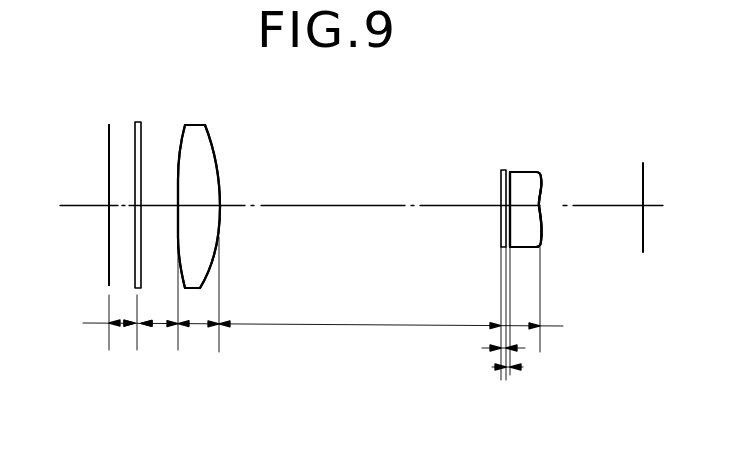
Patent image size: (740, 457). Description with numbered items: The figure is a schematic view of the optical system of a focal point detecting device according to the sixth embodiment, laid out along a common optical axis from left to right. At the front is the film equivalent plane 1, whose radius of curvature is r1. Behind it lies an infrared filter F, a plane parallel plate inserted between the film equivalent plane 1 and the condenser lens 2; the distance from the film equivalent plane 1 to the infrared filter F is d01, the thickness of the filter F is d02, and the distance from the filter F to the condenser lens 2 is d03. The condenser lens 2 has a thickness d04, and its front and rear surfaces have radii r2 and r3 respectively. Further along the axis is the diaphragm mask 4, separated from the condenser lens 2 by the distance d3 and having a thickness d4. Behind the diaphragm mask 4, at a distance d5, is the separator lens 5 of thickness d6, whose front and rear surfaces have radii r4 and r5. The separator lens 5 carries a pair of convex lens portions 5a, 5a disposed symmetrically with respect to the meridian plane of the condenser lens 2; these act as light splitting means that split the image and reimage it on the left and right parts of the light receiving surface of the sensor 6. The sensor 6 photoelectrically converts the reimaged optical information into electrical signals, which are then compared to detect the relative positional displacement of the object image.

The film equivalent plane 1 is at (109, 126).
The infrared filter F is at (138, 121).
The condenser lens 2 is at (195, 133).
The diaphragm mask 4 is at (501, 170).
The separator lens 5 is at (530, 170).
The convex lens portions 5a is at (537, 183).
The sensor 6 is at (642, 186).
The radius of curvature of the film equivalent plane r1 is at (109, 148).
The radius of the front surface of the condenser lens r2 is at (183, 146).
The radius of the rear surface of the condenser lens r3 is at (208, 142).
The radius of curvature of the front surface of the separator lens r4 is at (516, 182).
The radius of curvature of the rear surface of the separator lens r5 is at (541, 188).
The distance from the film equivalent plane to the infrared filter d01 is at (119, 325).
The thickness of the infrared filter d02 is at (137, 326).
The distance from the infrared filter to the condenser lens d03 is at (158, 326).
The thickness of the condenser lens d04 is at (198, 327).
The distance between the condenser lens and the diaphragm mask d3 is at (327, 328).
The thickness of the diaphragm mask d4 is at (500, 349).
The distance between the diaphragm mask and the separator lens d5 is at (507, 368).
The thickness of the separator lens d6 is at (527, 329).